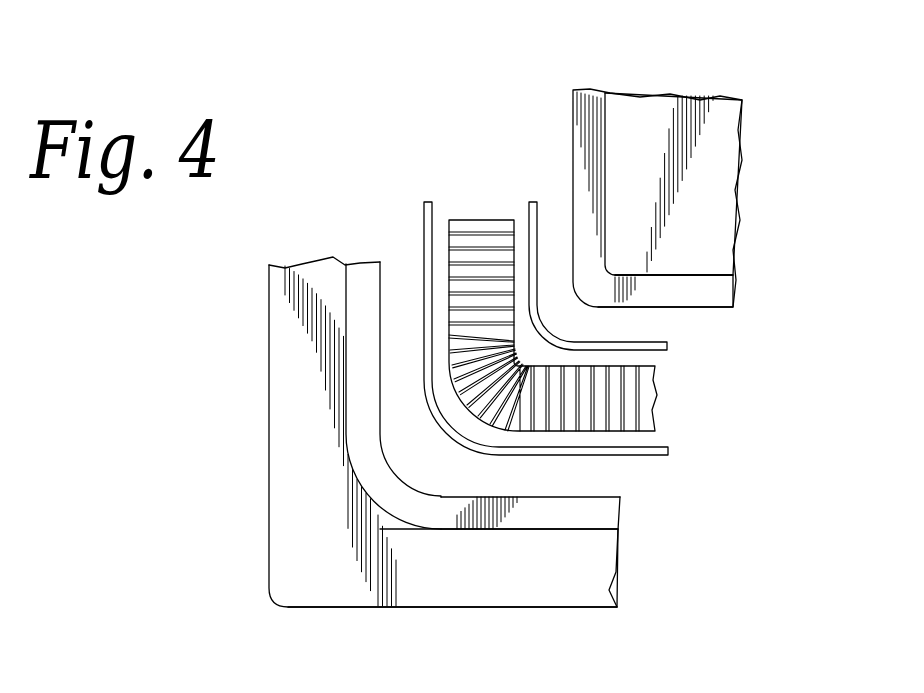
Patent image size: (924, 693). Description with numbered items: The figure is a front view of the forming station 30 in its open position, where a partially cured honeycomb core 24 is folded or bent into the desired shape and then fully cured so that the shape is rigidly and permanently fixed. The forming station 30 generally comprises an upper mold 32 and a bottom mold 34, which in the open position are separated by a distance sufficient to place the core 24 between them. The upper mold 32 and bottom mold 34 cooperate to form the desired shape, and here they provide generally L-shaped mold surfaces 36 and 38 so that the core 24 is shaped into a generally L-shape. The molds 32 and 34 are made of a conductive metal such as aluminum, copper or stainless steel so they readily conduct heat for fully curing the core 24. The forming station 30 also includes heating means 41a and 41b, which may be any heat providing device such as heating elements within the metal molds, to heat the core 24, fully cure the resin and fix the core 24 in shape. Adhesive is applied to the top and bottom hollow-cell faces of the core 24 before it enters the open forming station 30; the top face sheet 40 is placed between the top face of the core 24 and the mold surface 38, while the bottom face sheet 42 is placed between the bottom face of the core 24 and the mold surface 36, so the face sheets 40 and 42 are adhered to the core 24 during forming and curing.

The core 24 is at (479, 210).
The forming station 30 is at (345, 134).
The upper mold 32 is at (585, 87).
The bottom mold 34 is at (355, 268).
The mold surface 36 is at (616, 494).
The mold surface 38 is at (718, 307).
The top face sheet 40 is at (655, 343).
The heating means 41a is at (722, 238).
The heating means 41b is at (544, 586).
The bottom face sheet 42 is at (660, 456).